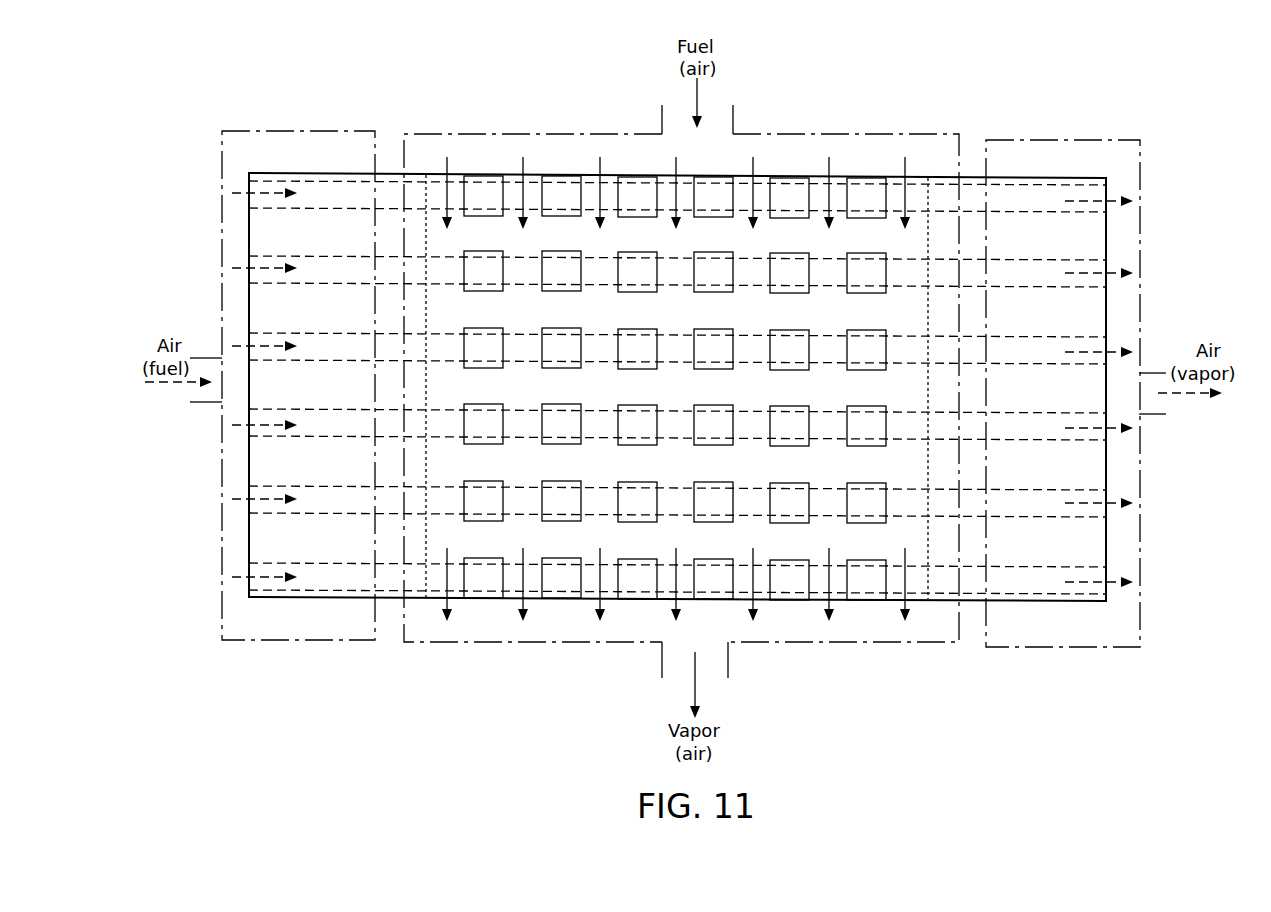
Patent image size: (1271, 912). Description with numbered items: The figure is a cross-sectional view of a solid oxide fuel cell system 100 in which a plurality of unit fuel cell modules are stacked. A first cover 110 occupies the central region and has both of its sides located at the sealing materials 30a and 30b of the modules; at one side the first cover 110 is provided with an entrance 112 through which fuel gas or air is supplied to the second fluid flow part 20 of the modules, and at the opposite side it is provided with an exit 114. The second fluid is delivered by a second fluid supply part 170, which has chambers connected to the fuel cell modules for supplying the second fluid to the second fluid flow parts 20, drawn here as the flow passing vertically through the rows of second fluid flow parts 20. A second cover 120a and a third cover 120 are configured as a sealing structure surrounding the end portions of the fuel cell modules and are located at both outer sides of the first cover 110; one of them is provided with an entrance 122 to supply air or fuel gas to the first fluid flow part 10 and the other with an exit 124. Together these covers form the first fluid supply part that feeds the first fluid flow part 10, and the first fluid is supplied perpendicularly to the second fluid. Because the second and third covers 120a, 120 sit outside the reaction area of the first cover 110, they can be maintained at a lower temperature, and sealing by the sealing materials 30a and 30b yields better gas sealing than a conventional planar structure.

The first fluid flow part 10 is at (241, 267).
The second fluid flow part 20 is at (840, 580).
The sealing material 30a is at (318, 222).
The sealing material 30b is at (1043, 228).
The solid oxide fuel cell system 100 is at (1012, 123).
The first cover 110 is at (830, 134).
The entrance 112 is at (735, 120).
The exit 114 is at (730, 665).
The right outer casing 120 is at (1077, 648).
The second cover 120a is at (236, 642).
The entrance 122 is at (197, 404).
The exit 124 is at (1145, 415).
The second fluid supply part 170 is at (646, 118).